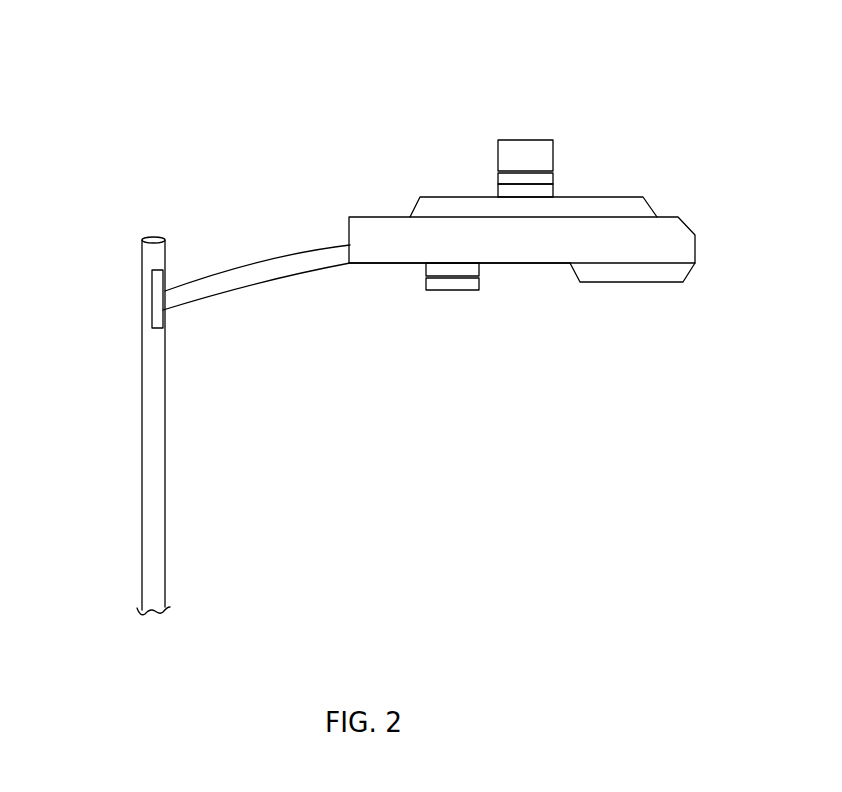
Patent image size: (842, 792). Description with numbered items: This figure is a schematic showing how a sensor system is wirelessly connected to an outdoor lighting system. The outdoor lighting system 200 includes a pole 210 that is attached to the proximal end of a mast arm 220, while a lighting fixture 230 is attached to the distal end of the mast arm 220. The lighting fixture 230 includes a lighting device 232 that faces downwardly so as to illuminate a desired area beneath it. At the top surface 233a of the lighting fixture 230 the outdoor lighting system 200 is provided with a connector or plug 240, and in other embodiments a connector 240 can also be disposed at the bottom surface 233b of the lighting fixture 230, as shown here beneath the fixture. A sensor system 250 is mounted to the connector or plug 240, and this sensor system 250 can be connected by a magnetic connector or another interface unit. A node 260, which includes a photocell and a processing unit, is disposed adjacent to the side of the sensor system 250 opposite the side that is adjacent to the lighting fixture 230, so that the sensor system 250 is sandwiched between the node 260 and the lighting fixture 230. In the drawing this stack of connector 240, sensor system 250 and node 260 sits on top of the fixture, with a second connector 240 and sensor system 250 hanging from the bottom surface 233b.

The outdoor lighting system 200 is at (253, 130).
The pole 210 is at (140, 310).
The mast arm 220 is at (263, 262).
The lighting fixture 230 is at (657, 210).
The lighting device 232 is at (647, 282).
The top surface 233a is at (643, 197).
The bottom surface 233b is at (360, 265).
The connector or plug 240 is at (498, 190).
The sensor system 250 is at (553, 177).
The node 260 is at (553, 152).